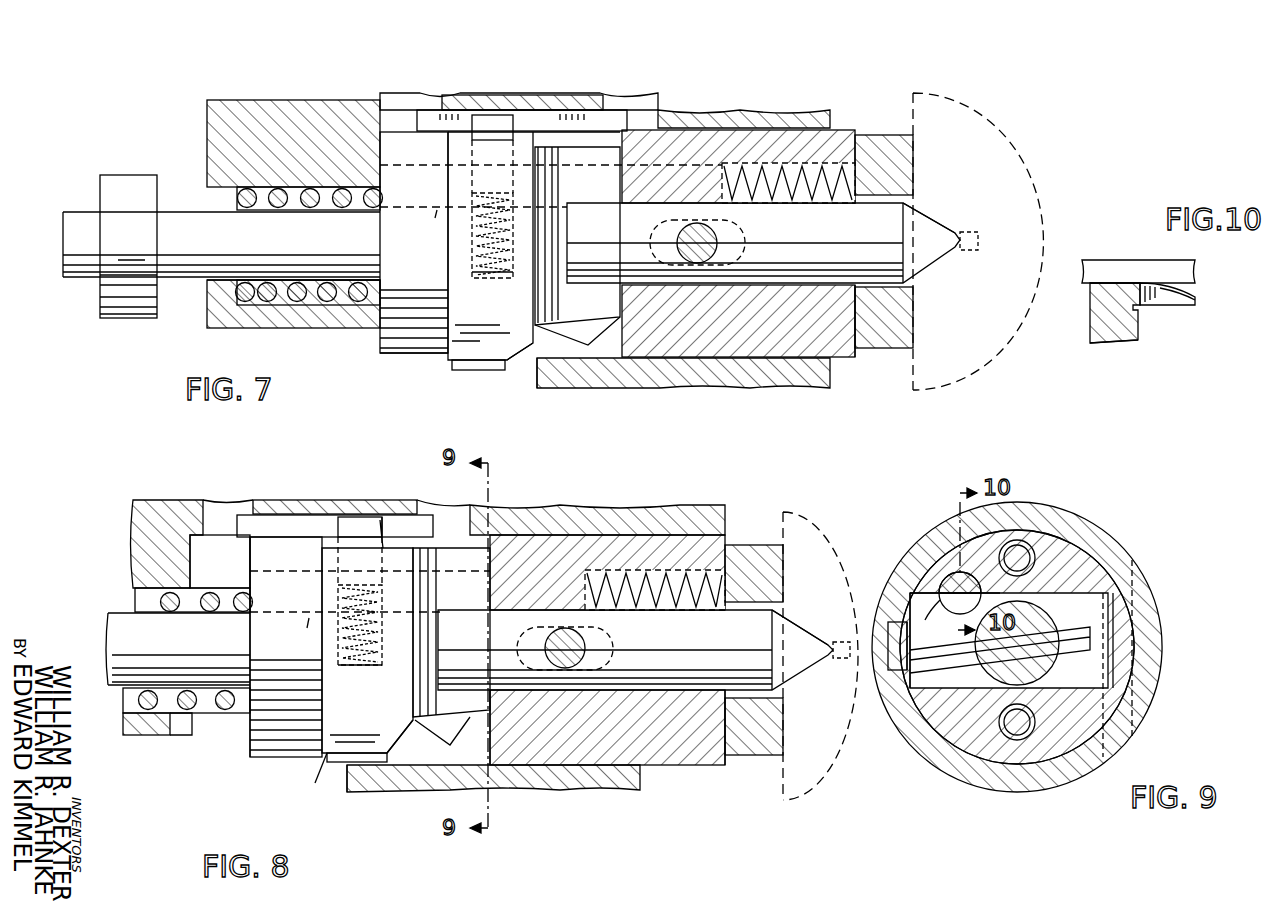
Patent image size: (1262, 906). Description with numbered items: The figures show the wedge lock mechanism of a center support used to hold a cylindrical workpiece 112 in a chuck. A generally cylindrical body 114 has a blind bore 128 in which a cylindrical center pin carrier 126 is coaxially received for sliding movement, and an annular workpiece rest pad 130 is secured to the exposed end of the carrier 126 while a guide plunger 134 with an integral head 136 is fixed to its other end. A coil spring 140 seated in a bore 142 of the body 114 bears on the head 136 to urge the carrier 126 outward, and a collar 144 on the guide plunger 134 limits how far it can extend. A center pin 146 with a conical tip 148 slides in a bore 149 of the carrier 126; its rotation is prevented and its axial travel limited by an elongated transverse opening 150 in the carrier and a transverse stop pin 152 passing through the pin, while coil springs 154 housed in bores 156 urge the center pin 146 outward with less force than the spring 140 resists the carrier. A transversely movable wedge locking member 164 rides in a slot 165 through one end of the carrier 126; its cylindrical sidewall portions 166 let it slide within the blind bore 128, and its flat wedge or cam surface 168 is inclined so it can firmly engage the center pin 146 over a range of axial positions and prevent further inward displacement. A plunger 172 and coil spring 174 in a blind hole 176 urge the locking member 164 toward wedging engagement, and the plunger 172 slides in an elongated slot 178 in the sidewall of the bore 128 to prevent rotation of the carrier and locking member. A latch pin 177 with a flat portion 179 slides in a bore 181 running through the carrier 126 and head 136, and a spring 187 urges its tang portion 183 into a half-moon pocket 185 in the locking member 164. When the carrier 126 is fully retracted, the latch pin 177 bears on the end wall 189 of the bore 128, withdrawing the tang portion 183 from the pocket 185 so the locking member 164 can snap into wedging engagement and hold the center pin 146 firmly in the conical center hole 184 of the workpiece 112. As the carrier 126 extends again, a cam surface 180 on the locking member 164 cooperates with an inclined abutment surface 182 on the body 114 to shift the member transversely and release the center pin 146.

In FIG. 7, the cylindrical workpiece 112 is at (987, 130).
In FIG. 8, the cylindrical workpiece 112 is at (816, 795).
In FIG. 7, the body 114 is at (295, 93).
In FIG. 8, the body 114 is at (182, 500).
In FIG. 7, the center pin carrier 126 is at (850, 360).
In FIG. 8, the center pin carrier 126 is at (670, 770).
In FIG. 7, the blind bore 128 is at (622, 370).
In FIG. 8, the blind bore 128 is at (417, 767).
In FIG. 7, the workpiece rest pad 130 is at (892, 132).
In FIG. 8, the workpiece rest pad 130 is at (756, 545).
In FIG. 7, the guide plunger 134 is at (172, 212).
In FIG. 8, the guide plunger 134 is at (118, 613).
In FIG. 7, the head 136 is at (378, 345).
In FIG. 8, the head 136 is at (252, 553).
In FIG. 7, the coil spring 140 is at (327, 303).
In FIG. 8, the coil spring 140 is at (225, 712).
In FIG. 7, the bore 142 is at (272, 318).
In FIG. 8, the bore 142 is at (165, 735).
In FIG. 7, the collar 144 is at (119, 180).
In FIG. 7, the center pin 146 is at (813, 240).
In FIG. 8, the center pin 146 is at (746, 650).
In FIG. 9, the center pin 146 is at (1047, 602).
In FIG. 7, the conical tip 148 is at (930, 212).
In FIG. 8, the conical tip 148 is at (790, 616).
In FIG. 7, the bore 149 is at (718, 290).
In FIG. 8, the bore 149 is at (615, 712).
In FIG. 7, the elongated transverse opening 150 is at (650, 224).
In FIG. 8, the elongated transverse opening 150 is at (613, 660).
In FIG. 7, the transverse stop pin 152 is at (677, 248).
In FIG. 8, the transverse stop pin 152 is at (580, 645).
In FIG. 9, the coil springs 154 is at (1030, 552).
In FIG. 9, the bores 156 is at (1040, 572).
In FIG. 7, the wedge locking member 164 is at (510, 317).
In FIG. 8, the wedge locking member 164 is at (374, 736).
In FIG. 9, the wedge locking member 164 is at (1098, 685).
In FIG. 10, the wedge locking member 164 is at (1142, 326).
In FIG. 8, the slot 165 is at (500, 740).
In FIG. 9, the slot 165 is at (942, 592).
In FIG. 8, the cylindrical sidewall portions 166 is at (383, 530).
In FIG. 9, the cylindrical sidewall portions 166 is at (925, 700).
In FIG. 7, the wedge or cam surface 168 is at (588, 314).
In FIG. 8, the wedge or cam surface 168 is at (466, 574).
In FIG. 9, the wedge or cam surface 168 is at (945, 660).
In FIG. 10, the wedge or cam surface 168 is at (1126, 343).
In FIG. 7, the plunger 172 is at (506, 115).
In FIG. 8, the plunger 172 is at (350, 517).
In FIG. 9, the plunger 172 is at (883, 688).
In FIG. 7, the coil spring 174 is at (472, 272).
In FIG. 8, the coil spring 174 is at (345, 668).
In FIG. 7, the blind hole 176 is at (473, 223).
In FIG. 8, the blind hole 176 is at (345, 642).
In FIG. 7, the latch pin 177 is at (636, 158).
In FIG. 8, the latch pin 177 is at (542, 535).
In FIG. 9, the latch pin 177 is at (958, 583).
In FIG. 10, the latch pin 177 is at (1181, 272).
In FIG. 7, the elongated slot 178 is at (578, 115).
In FIG. 8, the elongated slot 178 is at (363, 563).
In FIG. 9, the elongated slot 178 is at (878, 725).
In FIG. 7, the flat portion 179 is at (412, 224).
In FIG. 8, the flat portion 179 is at (283, 632).
In FIG. 10, the flat portion 179 is at (1110, 258).
In FIG. 7, the cam surface 180 is at (520, 375).
In FIG. 8, the cam surface 180 is at (497, 741).
In FIG. 9, the cam surface 180 is at (1125, 688).
In FIG. 8, the bore 181 is at (651, 570).
In FIG. 7, the inclined abutment surface 182 is at (585, 368).
In FIG. 8, the inclined abutment surface 182 is at (362, 793).
In FIG. 9, the tang portion 183 is at (1003, 600).
In FIG. 10, the tang portion 183 is at (1142, 283).
In FIG. 7, the conical center hole 184 is at (946, 262).
In FIG. 8, the conical center hole 184 is at (787, 692).
In FIG. 9, the half-moon pocket 185 is at (936, 621).
In FIG. 10, the half-moon pocket 185 is at (1150, 312).
In FIG. 7, the spring 187 is at (832, 160).
In FIG. 8, the spring 187 is at (696, 572).
In FIG. 7, the end wall 189 is at (380, 150).
In FIG. 8, the end wall 189 is at (225, 572).